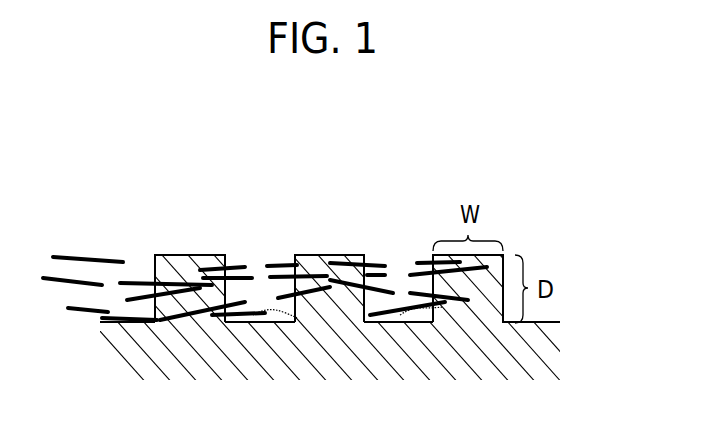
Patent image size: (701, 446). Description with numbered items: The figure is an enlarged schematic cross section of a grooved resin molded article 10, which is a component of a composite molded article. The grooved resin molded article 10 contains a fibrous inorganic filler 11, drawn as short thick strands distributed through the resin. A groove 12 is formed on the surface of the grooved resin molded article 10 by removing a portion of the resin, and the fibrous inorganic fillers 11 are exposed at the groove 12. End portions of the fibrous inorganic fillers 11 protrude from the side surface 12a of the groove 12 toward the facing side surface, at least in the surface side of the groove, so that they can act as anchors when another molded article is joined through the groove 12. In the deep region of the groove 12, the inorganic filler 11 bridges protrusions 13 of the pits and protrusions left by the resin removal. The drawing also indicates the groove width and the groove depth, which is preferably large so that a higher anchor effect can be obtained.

The grooved resin molded article 10 is at (575, 136).
The fibrous inorganic filler 11 is at (83, 258).
The groove 12 is at (157, 360).
The side surface of groove 12a is at (268, 344).
The protrusions 13 is at (463, 254).